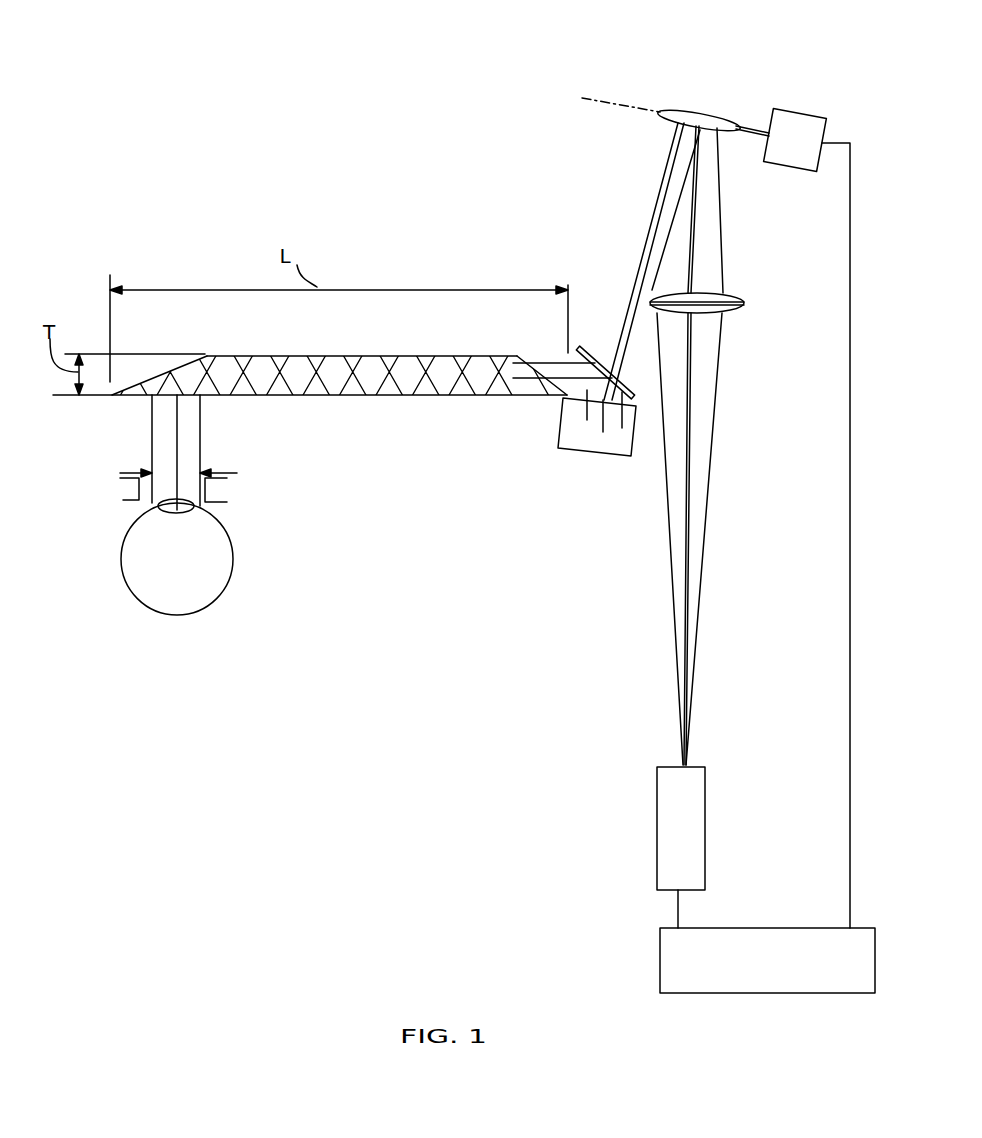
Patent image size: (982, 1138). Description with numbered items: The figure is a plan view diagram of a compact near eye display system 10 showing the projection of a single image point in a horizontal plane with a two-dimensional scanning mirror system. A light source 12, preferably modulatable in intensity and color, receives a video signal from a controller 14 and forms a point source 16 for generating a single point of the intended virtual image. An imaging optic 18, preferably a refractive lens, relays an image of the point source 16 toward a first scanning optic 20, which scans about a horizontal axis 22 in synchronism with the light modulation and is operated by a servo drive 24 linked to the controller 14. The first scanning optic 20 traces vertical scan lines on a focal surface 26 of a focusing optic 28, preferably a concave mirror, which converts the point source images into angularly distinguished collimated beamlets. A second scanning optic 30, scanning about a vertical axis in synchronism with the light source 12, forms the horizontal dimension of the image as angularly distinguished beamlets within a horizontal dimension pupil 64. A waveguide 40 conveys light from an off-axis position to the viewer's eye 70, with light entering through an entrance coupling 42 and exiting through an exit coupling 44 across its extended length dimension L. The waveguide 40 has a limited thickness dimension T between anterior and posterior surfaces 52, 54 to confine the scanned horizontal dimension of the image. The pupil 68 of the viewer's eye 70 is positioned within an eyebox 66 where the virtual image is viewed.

The compact near eye display system 10 is at (345, 187).
The light source 12 is at (670, 827).
The controller 14 is at (748, 971).
The point source 16 is at (687, 760).
The imaging optic 18 is at (733, 293).
The first scanning optic 20 is at (677, 112).
The horizontal axis 22 is at (607, 106).
The servo drive 24 is at (797, 130).
The focal surface 26 is at (642, 276).
The focusing optic 28 is at (567, 416).
The second scanning optic 30 is at (605, 360).
The waveguide 40 is at (310, 371).
The entrance coupling 42 is at (553, 363).
The exit coupling 44 is at (187, 363).
The anterior surface 52 is at (360, 355).
The posterior surface 54 is at (323, 398).
The horizontal dimension pupil 64 is at (138, 477).
The eyebox 66 is at (227, 502).
The pupil 68 is at (160, 502).
The eye 70 is at (207, 565).